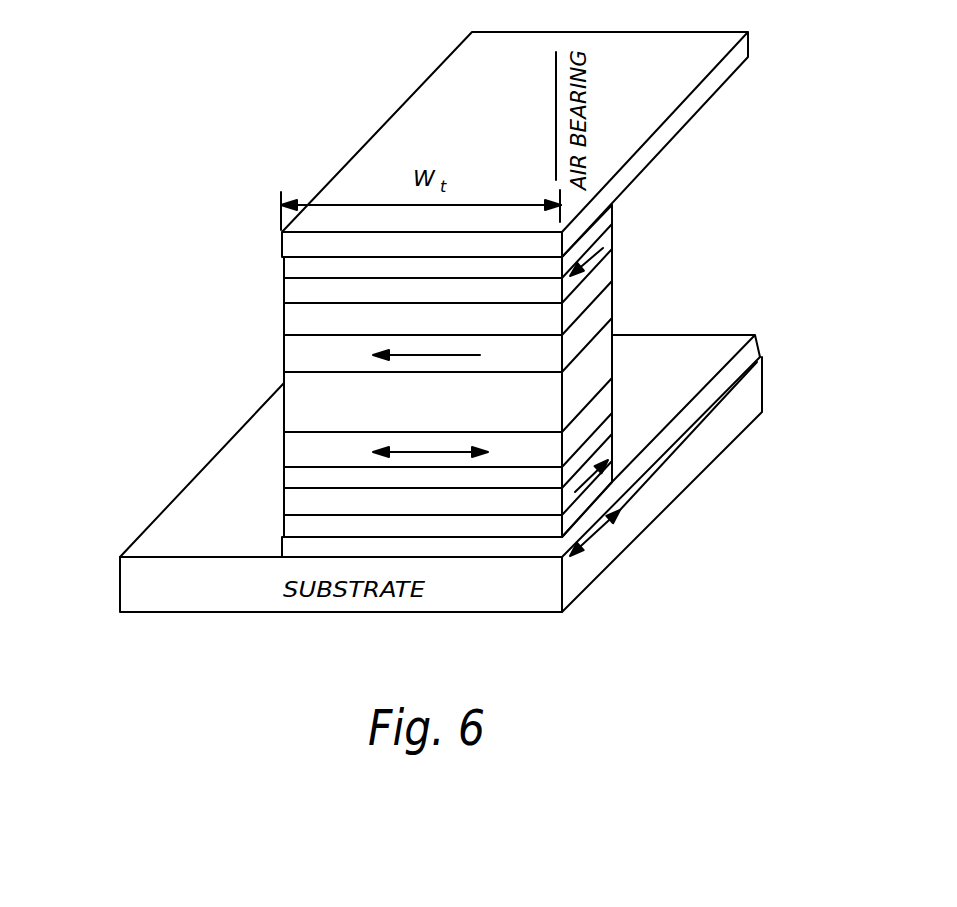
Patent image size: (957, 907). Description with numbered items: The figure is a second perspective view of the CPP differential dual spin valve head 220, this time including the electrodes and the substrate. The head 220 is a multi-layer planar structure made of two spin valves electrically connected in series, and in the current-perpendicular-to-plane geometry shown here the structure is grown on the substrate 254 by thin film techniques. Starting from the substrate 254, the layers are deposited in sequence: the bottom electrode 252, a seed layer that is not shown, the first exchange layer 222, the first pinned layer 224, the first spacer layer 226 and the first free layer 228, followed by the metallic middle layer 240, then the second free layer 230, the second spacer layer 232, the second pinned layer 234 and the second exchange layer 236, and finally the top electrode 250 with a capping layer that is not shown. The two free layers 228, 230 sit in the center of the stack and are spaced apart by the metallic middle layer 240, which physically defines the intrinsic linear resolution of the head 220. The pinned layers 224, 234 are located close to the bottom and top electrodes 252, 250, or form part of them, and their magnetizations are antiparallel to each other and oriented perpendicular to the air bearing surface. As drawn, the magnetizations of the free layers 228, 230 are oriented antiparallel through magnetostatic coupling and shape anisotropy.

The CPP differential dual spin valve head 220 is at (170, 187).
The first exchange layer 222 is at (297, 527).
The first pinned layer 224 is at (303, 503).
The first spacer layer 226 is at (303, 482).
The first free layer 228 is at (303, 453).
The second free layer 230 is at (550, 352).
The second spacer layer 232 is at (547, 322).
The second pinned layer 234 is at (612, 245).
The second exchange layer 236 is at (612, 220).
The metallic middle layer 240 is at (303, 398).
The top electrode 250 is at (378, 130).
The bottom electrode 252 is at (760, 356).
The substrate 254 is at (618, 530).